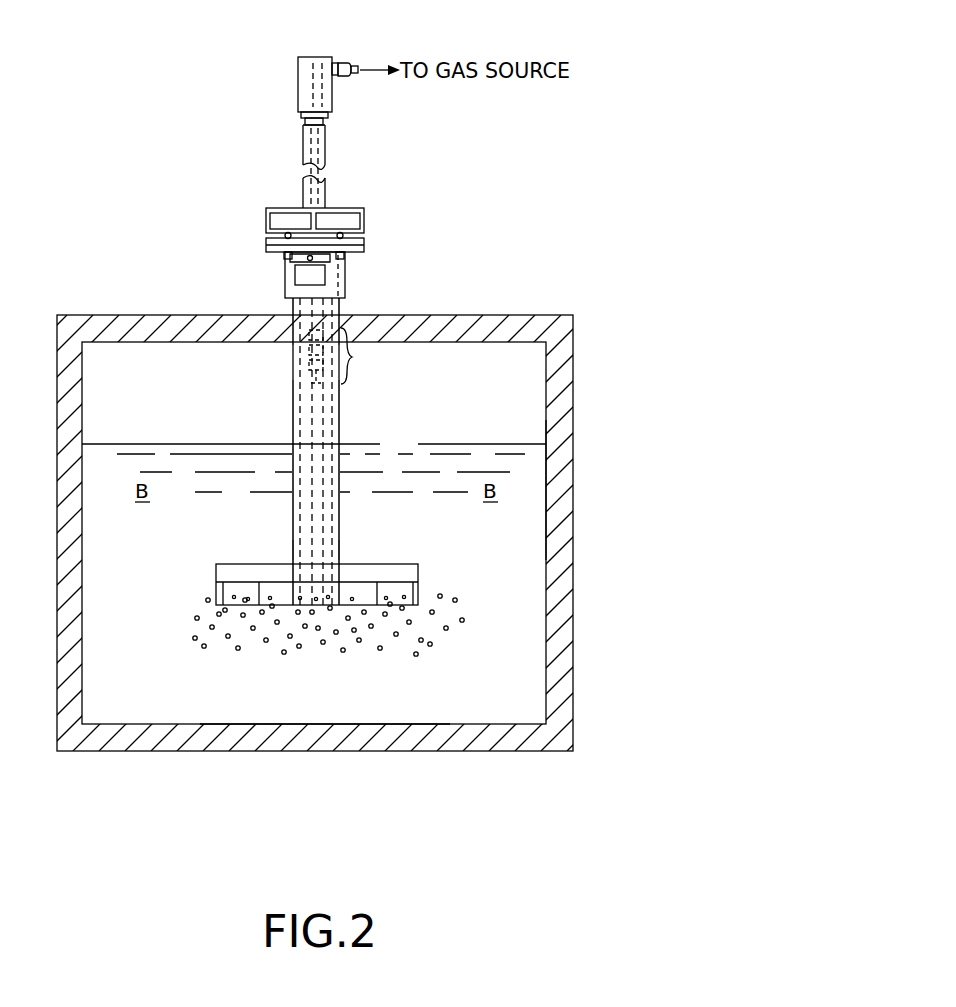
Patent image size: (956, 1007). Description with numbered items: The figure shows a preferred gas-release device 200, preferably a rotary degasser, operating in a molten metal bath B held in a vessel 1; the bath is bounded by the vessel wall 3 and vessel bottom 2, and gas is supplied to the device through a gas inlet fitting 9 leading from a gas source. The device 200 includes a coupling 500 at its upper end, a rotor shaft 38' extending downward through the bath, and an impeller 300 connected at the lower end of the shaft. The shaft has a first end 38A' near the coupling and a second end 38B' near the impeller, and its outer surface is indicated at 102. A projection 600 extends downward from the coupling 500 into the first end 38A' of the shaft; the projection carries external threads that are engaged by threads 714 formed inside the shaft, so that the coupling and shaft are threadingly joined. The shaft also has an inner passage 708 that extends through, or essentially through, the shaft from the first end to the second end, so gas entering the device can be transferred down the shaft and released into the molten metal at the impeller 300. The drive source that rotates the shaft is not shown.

The vessel 1 is at (497, 309).
The vessel bottom wall 2 is at (320, 736).
The vessel side wall 3 is at (556, 493).
The gas inlet fitting 9 is at (356, 66).
The gas-release device 200 is at (339, 341).
The coupling 500 is at (357, 270).
The outer tube 102 is at (341, 306).
The upper tube portion 38A' is at (250, 305).
The projection 600 is at (295, 323).
The threads 714 is at (352, 356).
The inner passage 708 is at (313, 400).
The tube 38' is at (376, 468).
The lower tube portion 38B' is at (262, 563).
The impeller 300 is at (424, 558).